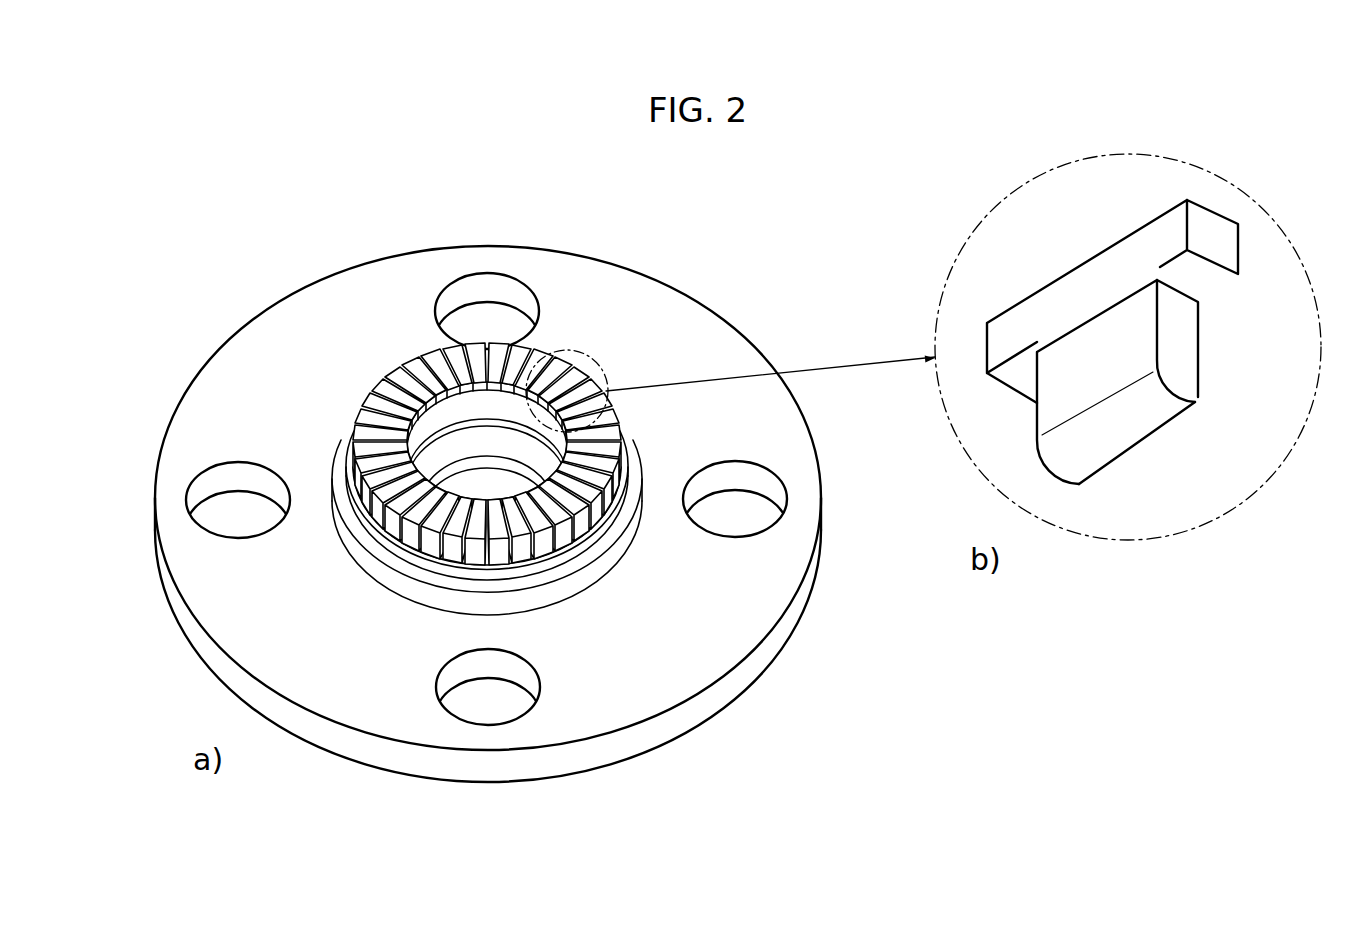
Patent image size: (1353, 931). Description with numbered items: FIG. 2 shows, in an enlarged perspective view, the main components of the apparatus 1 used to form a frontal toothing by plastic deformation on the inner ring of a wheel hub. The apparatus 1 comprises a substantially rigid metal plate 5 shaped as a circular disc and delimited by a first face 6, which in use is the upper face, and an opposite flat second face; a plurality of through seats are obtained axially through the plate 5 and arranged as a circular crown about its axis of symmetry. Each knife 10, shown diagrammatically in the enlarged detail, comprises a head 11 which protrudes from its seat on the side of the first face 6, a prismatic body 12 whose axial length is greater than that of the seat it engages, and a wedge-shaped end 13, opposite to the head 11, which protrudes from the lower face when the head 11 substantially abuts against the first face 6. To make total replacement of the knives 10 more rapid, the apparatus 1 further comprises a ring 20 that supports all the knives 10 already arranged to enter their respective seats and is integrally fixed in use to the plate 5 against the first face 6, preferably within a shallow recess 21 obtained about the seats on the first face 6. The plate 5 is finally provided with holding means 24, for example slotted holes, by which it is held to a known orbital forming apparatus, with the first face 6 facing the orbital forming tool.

The apparatus 1 is at (306, 200).
The plate 5 is at (731, 651).
The first face 6 is at (668, 322).
The knife 10 is at (1128, 313).
The head 11 is at (375, 403).
The prismatic body 12 is at (1148, 352).
The wedge-shaped end 13 is at (1132, 425).
The ring 20 is at (626, 508).
The shallow recess 21 is at (592, 586).
The holding means 24 is at (513, 302).